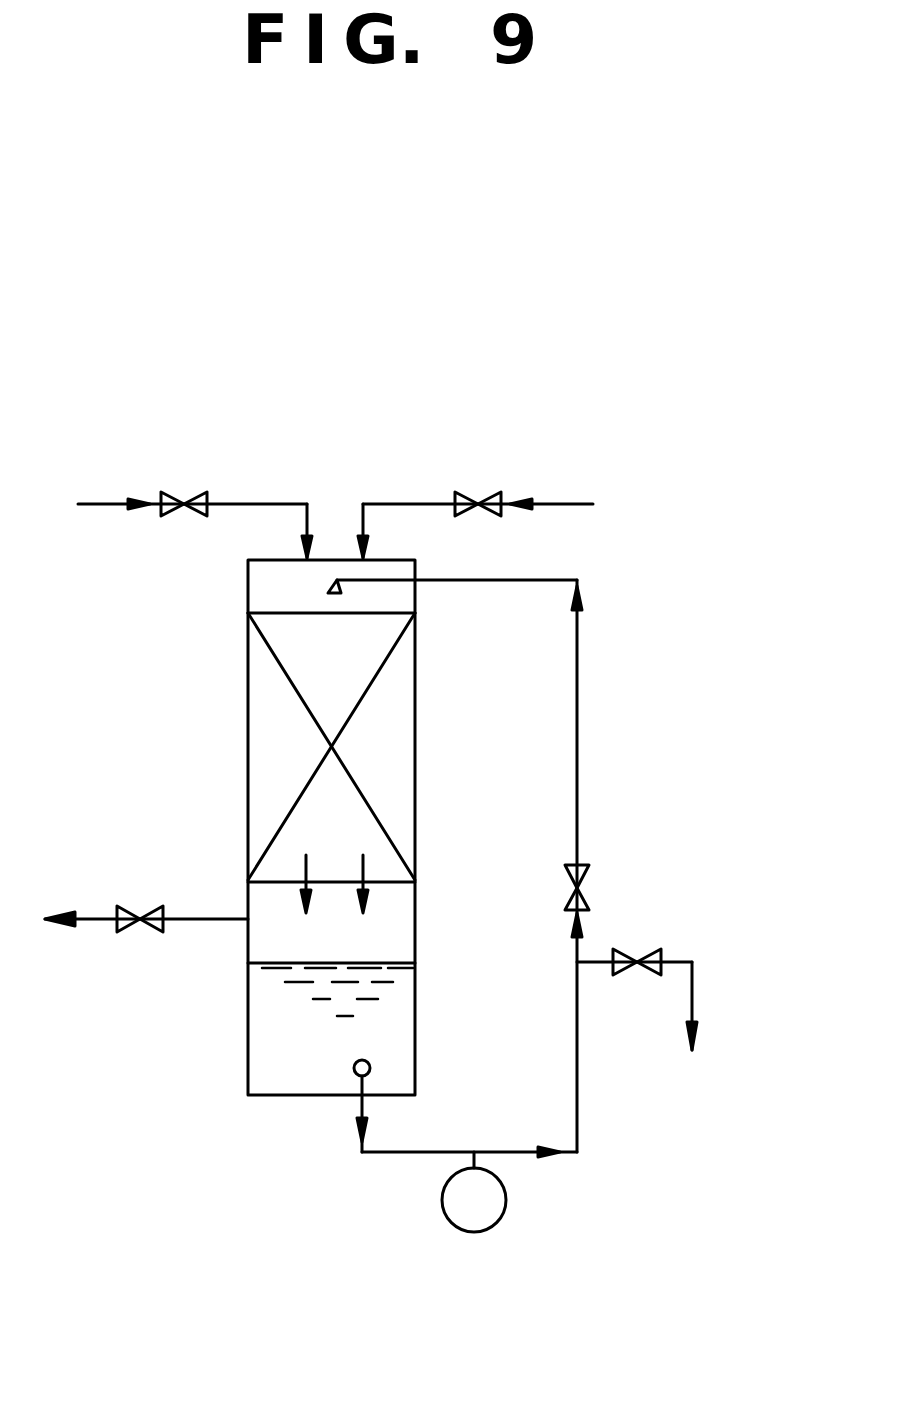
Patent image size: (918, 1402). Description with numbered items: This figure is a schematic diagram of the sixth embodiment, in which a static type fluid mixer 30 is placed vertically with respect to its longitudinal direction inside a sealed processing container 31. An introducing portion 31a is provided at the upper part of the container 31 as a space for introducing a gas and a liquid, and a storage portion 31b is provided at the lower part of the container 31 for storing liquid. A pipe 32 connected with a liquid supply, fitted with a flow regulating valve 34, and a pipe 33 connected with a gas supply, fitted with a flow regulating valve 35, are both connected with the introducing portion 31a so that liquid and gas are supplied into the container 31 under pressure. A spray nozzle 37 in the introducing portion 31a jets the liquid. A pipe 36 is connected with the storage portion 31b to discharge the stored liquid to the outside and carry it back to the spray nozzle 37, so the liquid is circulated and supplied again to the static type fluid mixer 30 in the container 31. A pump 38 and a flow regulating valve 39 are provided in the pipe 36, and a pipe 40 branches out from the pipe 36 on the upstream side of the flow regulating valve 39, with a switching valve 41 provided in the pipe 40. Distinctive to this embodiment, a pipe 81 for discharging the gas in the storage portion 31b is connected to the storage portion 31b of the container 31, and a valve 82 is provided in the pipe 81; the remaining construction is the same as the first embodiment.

The static type fluid mixer 30 is at (228, 754).
The sealed processing container 31 is at (248, 583).
The introducing portion 31a is at (278, 568).
The storage portion 31b is at (268, 1057).
The pipe 32 is at (268, 504).
The pipe 33 is at (403, 505).
The flow regulating valve 34 is at (190, 500).
The flow regulating valve 35 is at (482, 500).
The pipe 36 is at (360, 1100).
The spray nozzle 37 is at (338, 594).
The pump 38 is at (505, 1212).
The flow regulating valve 39 is at (586, 888).
The pipe 40 is at (692, 985).
The switching valve 41 is at (640, 950).
The pipe 81 is at (94, 915).
The valve 82 is at (172, 900).